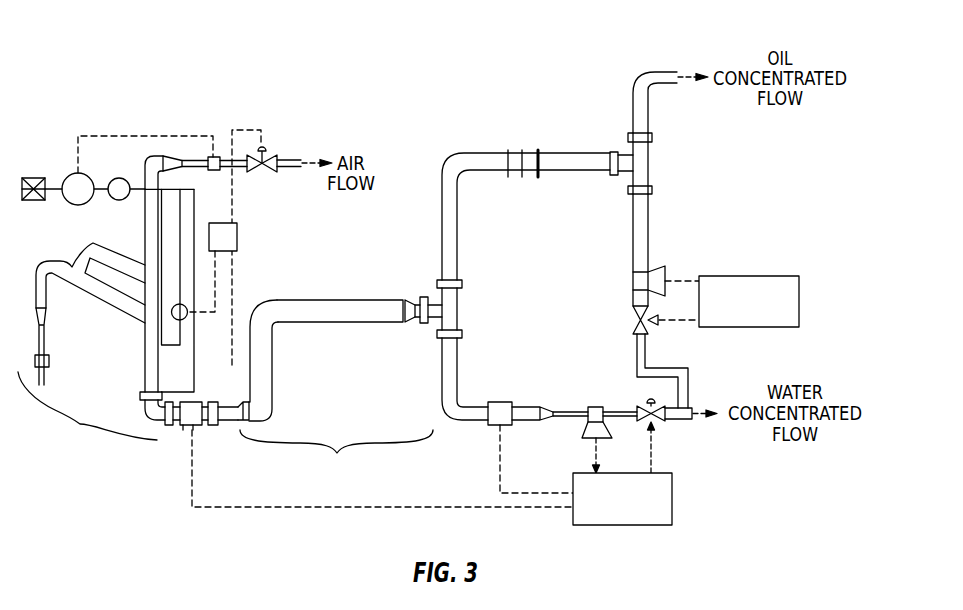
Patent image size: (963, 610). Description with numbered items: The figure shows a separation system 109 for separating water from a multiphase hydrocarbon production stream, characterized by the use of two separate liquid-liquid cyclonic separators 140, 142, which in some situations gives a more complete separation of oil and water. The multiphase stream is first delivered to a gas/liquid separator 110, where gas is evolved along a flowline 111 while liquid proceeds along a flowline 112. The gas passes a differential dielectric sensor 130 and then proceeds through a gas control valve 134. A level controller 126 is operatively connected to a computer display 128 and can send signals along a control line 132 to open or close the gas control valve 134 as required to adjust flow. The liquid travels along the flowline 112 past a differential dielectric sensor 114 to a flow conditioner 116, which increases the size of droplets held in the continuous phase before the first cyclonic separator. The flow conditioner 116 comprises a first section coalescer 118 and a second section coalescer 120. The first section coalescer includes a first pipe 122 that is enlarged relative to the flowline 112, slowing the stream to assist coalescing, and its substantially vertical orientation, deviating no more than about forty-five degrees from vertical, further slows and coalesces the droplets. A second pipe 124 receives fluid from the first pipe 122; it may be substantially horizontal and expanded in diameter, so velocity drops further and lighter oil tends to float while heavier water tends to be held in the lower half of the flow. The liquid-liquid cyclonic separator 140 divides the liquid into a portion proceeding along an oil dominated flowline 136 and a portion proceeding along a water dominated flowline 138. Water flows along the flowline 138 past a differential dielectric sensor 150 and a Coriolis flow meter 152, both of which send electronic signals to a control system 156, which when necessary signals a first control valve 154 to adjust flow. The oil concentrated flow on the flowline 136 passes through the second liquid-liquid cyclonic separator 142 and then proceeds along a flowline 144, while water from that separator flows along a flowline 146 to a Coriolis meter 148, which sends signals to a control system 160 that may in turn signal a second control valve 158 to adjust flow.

The separation system 109 is at (128, 44).
The gas/liquid separator 110 is at (87, 419).
The flowline 111 is at (142, 238).
The flowline 112 is at (145, 365).
The differential dielectric sensor 114 is at (187, 427).
The flow conditioner 116 is at (336, 459).
The first section coalescer 118 is at (292, 398).
The second section coalescer 120 is at (368, 342).
The first pipe 122 is at (273, 347).
The second pipe 124 is at (335, 298).
The level controller 126 is at (238, 232).
The computer display 128 is at (33, 178).
The differential dielectric sensor 130 is at (213, 155).
The control line 132 is at (250, 128).
The gas control valve 134 is at (264, 150).
The oil dominated flowline 136 is at (457, 241).
The water dominated flowline 138 is at (457, 370).
The liquid-liquid cyclonic separator 140 is at (457, 317).
The liquid-liquid cyclonic separator 142 is at (650, 155).
The flowline 144 is at (632, 113).
The flowline 146 is at (650, 227).
The Coriolis meter 148 is at (632, 280).
The differential dielectric sensor 150 is at (490, 430).
The Coriolis flow meter 152 is at (596, 407).
The first control valve 154 is at (657, 418).
The control system 156 is at (673, 498).
The second control valve 158 is at (635, 313).
The control system 160 is at (760, 276).